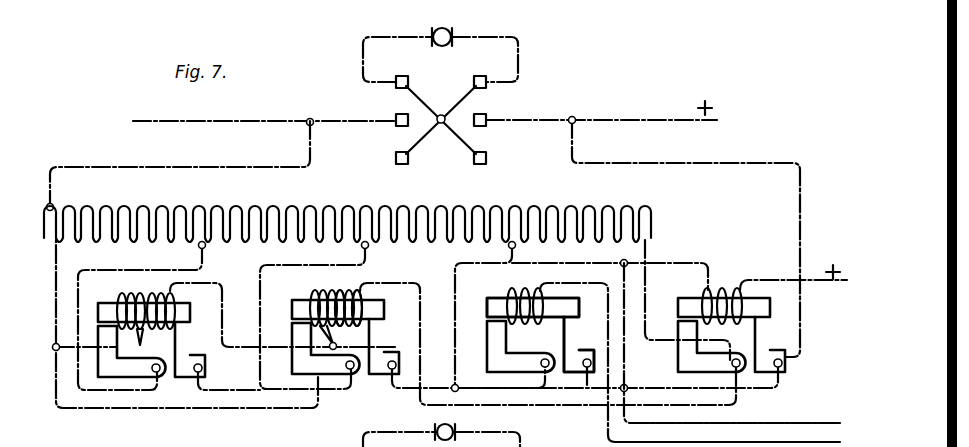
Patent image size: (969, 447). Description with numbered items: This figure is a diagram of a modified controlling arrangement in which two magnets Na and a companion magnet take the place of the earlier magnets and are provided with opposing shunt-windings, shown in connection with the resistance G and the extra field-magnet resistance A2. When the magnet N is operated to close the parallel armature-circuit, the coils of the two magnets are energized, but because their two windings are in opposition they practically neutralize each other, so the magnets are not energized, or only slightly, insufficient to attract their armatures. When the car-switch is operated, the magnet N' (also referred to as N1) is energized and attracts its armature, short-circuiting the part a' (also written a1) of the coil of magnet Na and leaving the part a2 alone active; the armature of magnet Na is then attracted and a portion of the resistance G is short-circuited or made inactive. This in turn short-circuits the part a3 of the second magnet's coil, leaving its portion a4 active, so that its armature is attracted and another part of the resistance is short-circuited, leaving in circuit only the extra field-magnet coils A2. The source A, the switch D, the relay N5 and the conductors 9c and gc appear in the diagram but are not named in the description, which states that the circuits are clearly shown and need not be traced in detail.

The generator / alternating current source A is at (440, 43).
The reversing switch D is at (441, 120).
The extra field-magnet resistance A2 is at (179, 166).
The resistance G is at (347, 208).
The coil portion of magnet Nb a4 is at (127, 301).
The coil portion of magnet Nb a3 is at (161, 301).
The relay N5 is at (156, 340).
The coil portion of magnet Na a2 is at (323, 299).
The coil portion of magnet Na a' is at (348, 300).
The relay winding (a prime) a1 is at (348, 300).
The magnet Na is at (348, 337).
The magnet N' is at (541, 330).
The relay (N prime) N1 is at (541, 335).
The magnet N is at (732, 330).
The line conductors 9c is at (690, 352).
The line conductors gc is at (727, 422).